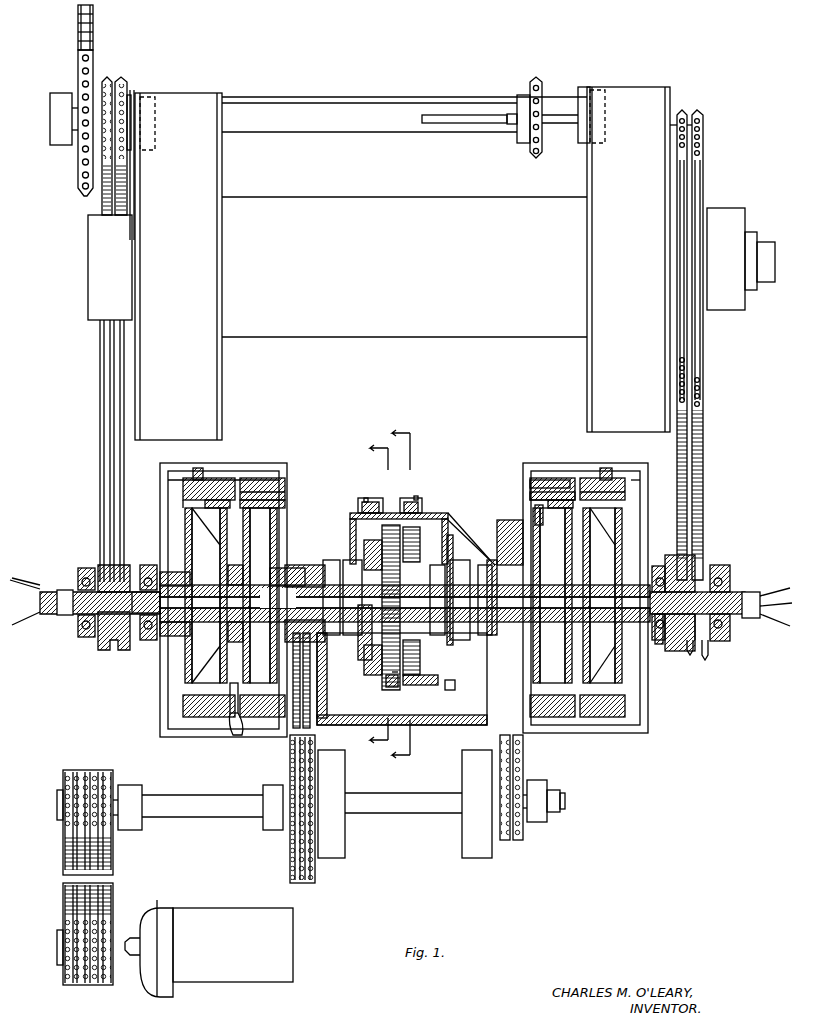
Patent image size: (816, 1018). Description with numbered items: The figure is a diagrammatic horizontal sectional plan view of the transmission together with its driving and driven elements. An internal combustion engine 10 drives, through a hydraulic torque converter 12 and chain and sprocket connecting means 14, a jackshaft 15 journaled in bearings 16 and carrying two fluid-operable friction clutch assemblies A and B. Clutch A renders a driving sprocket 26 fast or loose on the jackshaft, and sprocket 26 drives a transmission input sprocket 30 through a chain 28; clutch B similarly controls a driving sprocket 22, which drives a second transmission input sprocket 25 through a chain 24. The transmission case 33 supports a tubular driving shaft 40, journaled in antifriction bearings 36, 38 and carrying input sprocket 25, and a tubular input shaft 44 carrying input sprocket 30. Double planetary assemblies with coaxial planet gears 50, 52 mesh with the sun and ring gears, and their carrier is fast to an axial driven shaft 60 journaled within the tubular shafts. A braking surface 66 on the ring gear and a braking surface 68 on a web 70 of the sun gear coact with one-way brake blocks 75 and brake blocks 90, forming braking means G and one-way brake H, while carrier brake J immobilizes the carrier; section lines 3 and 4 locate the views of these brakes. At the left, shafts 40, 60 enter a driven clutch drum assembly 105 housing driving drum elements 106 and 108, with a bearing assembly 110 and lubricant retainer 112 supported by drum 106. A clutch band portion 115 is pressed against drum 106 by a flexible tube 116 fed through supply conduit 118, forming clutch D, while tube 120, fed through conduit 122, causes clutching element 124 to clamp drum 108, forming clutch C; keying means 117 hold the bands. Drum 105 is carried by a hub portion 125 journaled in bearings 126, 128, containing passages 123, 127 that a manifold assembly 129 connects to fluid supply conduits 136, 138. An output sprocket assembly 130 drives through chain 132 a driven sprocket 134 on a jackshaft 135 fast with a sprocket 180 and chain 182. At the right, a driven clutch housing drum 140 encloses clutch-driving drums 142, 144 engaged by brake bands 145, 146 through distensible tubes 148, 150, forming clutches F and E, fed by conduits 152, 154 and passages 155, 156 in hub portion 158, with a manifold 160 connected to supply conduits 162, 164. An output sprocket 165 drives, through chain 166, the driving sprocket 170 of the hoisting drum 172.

The internal combustion engine 10 is at (285, 924).
The hydraulic torque converter 12 is at (162, 910).
The chain and sprocket connecting means 14 is at (113, 864).
The jackshaft 15 is at (185, 800).
The bearings 16 is at (132, 785).
The driving sprocket 22 is at (290, 855).
The chain 24 is at (305, 705).
The transmission input sprocket 25 is at (300, 568).
The driving sprocket 26 is at (523, 773).
The chain 28 is at (510, 755).
The transmission input sprocket 30 is at (500, 530).
The case 33 is at (352, 525).
The antifriction bearing 36 is at (331, 597).
The antifriction bearing 38 is at (353, 597).
The tubular driving shaft 40 is at (292, 565).
The tubular input shaft 44 is at (505, 548).
The planet gear 50 is at (392, 676).
The planet gear 52 is at (450, 650).
The axial driven shaft 60 is at (405, 603).
The outer peripheral braking surface 66 is at (420, 686).
The braking surface 68 is at (360, 683).
The web 70 is at (372, 660).
The wedge blocks 75 is at (418, 500).
The one-way brake blocks 90 is at (370, 500).
The clutch drum assembly 105 is at (232, 478).
The clutch driving drum element 106 is at (277, 507).
The clutch driving drum element 108 is at (205, 595).
The antifriction bearing assembly 110 is at (238, 565).
The lubricant retainer 112 is at (235, 642).
The clutch band portion 115 is at (285, 493).
The hollow annular flexible tube 116 is at (276, 478).
The keying means 117 is at (230, 701).
The supply conduit 118 is at (160, 682).
The clutch applying tube 120 is at (197, 470).
The conduit 122 is at (168, 479).
The passage 123 is at (168, 626).
The clutching element 124 is at (190, 505).
The hub portion 125 is at (146, 640).
The antifriction bearing means 126 is at (86, 575).
The passage 127 is at (168, 585).
The antifriction bearing means 128 is at (146, 565).
The manifold assembly 129 is at (65, 615).
The output sprocket assembly 130 is at (108, 650).
The driving chain 132 is at (100, 376).
The driven sprocket 134 is at (108, 77).
The jackshaft 135 is at (340, 105).
The fluid supply conduit 136 is at (22, 620).
The fluid supply conduit 138 is at (38, 577).
The driven clutch housing drum 140 is at (578, 478).
The clutch-driving drum 142 is at (537, 512).
The clutch-driving drum 144 is at (618, 515).
The brake band 145 is at (533, 502).
The brake band 146 is at (615, 500).
The distensible tube 148 is at (532, 482).
The distensible tube 150 is at (618, 478).
The conduit 152 is at (648, 694).
The conduit 154 is at (642, 478).
The fluid delivery passage 155 is at (662, 635).
The fluid delivery passage 156 is at (685, 570).
The hub portion 158 is at (718, 628).
The manifold 160 is at (748, 592).
The fluid supply conduit 162 is at (778, 623).
The fluid supply conduit 164 is at (780, 586).
The output sprocket 165 is at (700, 648).
The chain 166 is at (703, 440).
The driving sprocket 170 is at (697, 110).
The hoisting drum 172 is at (402, 263).
The sprocket 180 is at (93, 58).
The chain 182 is at (93, 25).
The section line 3- 3 is at (388, 595).
The section line 4- 4 is at (365, 594).
The friction clutch assembly A is at (474, 870).
The friction clutch assembly B is at (344, 864).
The clutch and applying means C is at (222, 460).
The clutch applying means D is at (258, 462).
The right-hand clutch E is at (582, 462).
The clutch F is at (538, 462).
The one-way braking means G is at (416, 496).
The one-way brake H is at (366, 498).
The carrier brake J is at (393, 672).